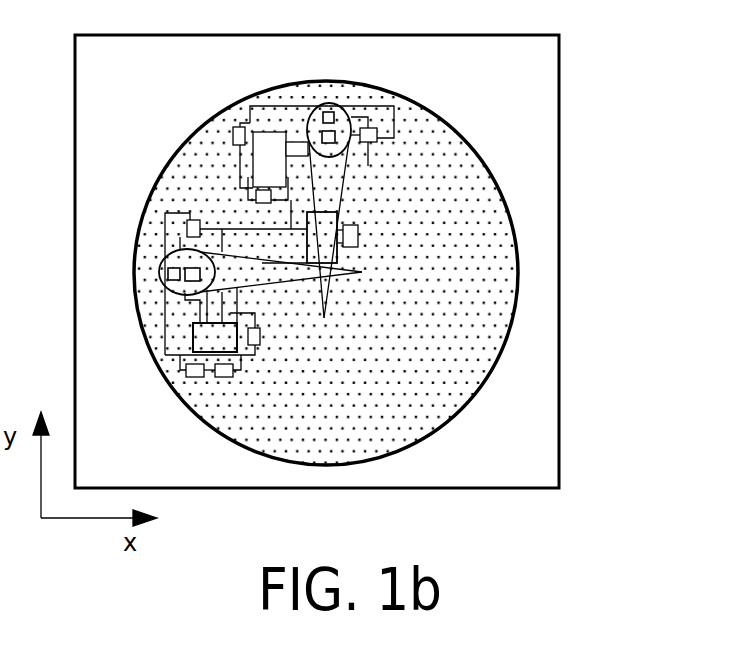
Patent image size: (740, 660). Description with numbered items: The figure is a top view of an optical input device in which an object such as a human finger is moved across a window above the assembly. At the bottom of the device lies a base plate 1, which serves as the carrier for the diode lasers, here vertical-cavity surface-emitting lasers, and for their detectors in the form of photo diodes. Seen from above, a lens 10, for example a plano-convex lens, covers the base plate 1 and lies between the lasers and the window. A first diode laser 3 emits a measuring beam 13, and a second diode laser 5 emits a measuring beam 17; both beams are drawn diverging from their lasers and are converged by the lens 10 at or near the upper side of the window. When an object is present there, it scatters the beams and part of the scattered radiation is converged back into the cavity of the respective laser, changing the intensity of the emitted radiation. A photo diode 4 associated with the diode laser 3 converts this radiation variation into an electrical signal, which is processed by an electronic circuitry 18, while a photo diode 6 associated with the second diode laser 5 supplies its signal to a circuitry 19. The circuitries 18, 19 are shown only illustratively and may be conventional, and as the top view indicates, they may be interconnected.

The base plate 1 is at (532, 108).
The lens 10 is at (452, 147).
The diode laser 3 is at (328, 104).
The electronic circuitry 18 is at (372, 127).
The photo diode 4 is at (349, 146).
The measuring beam 13 is at (342, 193).
The circuitry 19 is at (165, 219).
The second diode laser 5 is at (167, 273).
The photo diode 6 is at (160, 290).
The measuring beam 17 is at (278, 284).